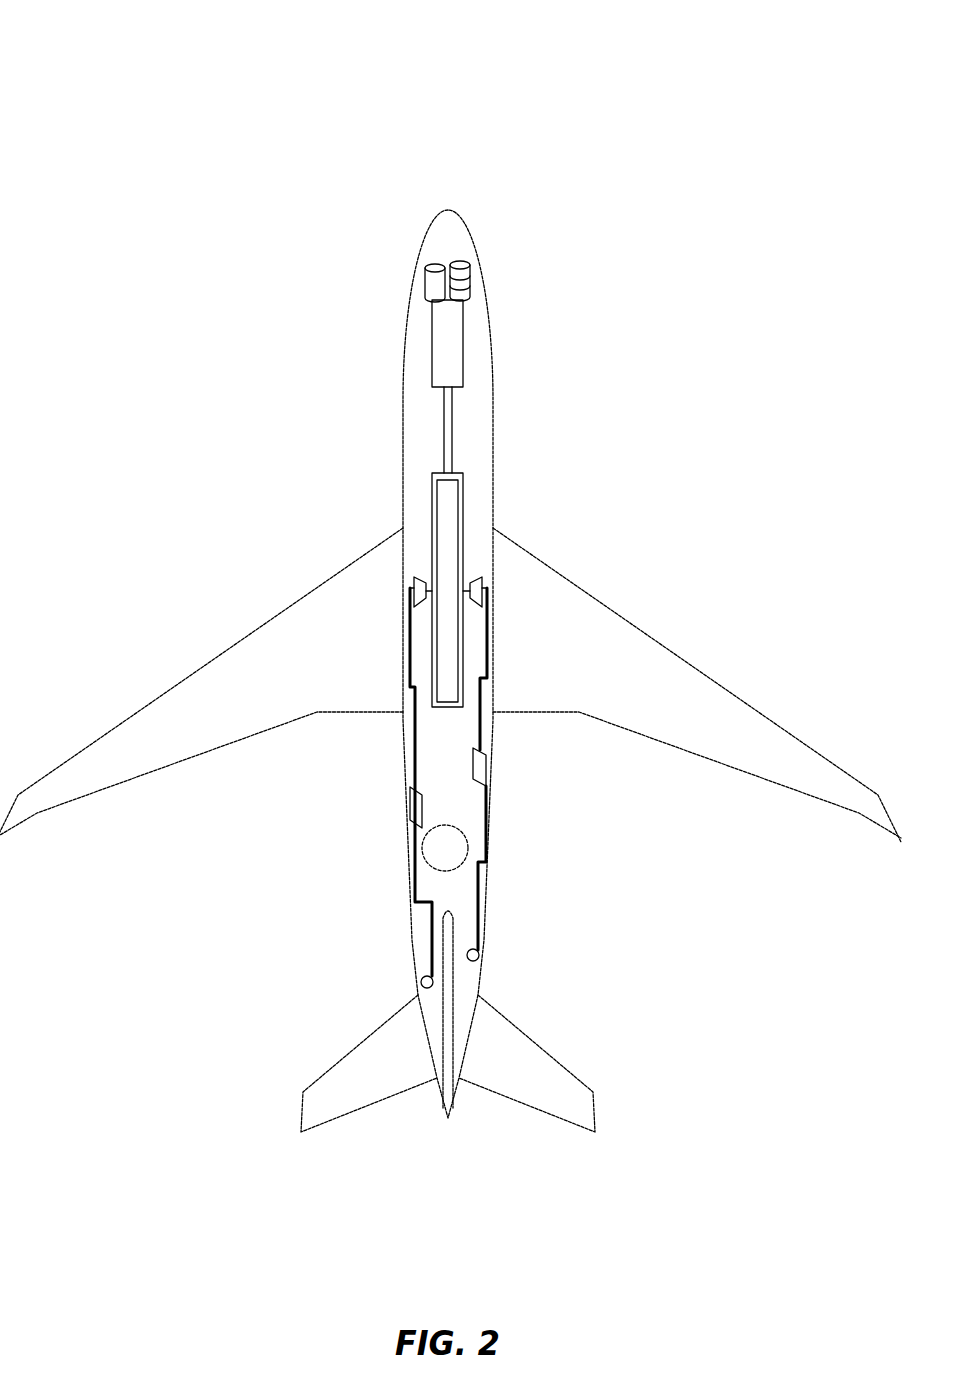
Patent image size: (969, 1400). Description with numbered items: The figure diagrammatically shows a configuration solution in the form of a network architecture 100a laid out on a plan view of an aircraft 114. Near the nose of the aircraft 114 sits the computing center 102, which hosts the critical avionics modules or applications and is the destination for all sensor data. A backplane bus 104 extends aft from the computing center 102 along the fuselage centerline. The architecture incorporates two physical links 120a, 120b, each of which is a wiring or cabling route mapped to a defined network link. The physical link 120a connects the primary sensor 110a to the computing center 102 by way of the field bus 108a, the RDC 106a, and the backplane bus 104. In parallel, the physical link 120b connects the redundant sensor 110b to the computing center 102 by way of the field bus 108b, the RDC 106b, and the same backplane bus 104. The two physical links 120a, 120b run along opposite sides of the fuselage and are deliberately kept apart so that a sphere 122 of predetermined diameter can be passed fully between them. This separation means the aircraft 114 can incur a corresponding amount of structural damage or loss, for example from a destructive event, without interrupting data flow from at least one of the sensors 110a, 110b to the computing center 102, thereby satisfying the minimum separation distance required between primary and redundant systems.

The network architecture 100a is at (82, 73).
The computing center 102 is at (459, 263).
The backplane bus 104 is at (443, 492).
The RDC 106a is at (414, 577).
The RDC 106b is at (482, 577).
The field bus 108a is at (410, 805).
The field bus 108b is at (486, 765).
The primary sensor 110a is at (420, 981).
The redundant sensor 110b is at (474, 962).
The aircraft 114 is at (590, 347).
The physical link 120a is at (409, 628).
The physical link 120b is at (489, 632).
The sphere 122 is at (450, 850).